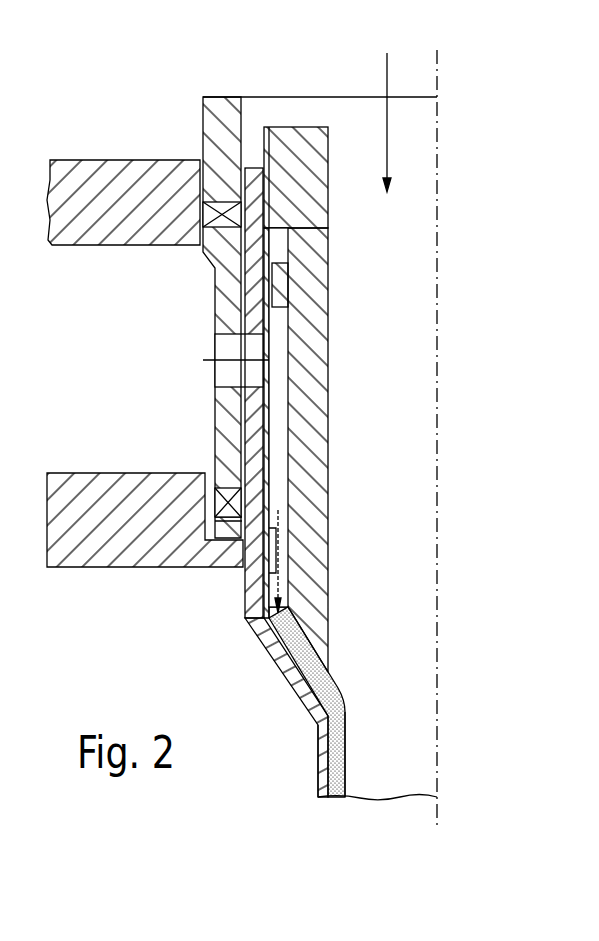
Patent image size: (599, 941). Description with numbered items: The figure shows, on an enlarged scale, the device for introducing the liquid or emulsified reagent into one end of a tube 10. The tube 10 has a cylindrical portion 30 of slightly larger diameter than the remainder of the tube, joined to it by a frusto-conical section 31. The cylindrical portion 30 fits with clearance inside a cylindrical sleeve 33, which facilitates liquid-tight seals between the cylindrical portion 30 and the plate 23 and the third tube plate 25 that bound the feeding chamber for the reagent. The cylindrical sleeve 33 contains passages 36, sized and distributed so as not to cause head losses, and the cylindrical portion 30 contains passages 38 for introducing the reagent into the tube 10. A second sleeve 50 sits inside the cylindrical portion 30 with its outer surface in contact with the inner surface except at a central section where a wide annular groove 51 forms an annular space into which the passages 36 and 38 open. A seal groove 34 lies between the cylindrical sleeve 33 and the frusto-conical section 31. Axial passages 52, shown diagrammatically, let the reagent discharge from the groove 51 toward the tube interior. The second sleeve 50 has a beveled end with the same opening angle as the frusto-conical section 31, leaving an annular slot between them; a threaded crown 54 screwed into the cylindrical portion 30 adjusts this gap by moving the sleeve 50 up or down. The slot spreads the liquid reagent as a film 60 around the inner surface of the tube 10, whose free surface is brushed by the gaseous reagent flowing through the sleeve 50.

The tube 10 is at (318, 763).
The plate 23 is at (107, 553).
The third tube plate 25 is at (90, 167).
The cylindrical portion 30 is at (263, 438).
The frusto-conical section 31 is at (282, 660).
The cylindrical sleeve 33 is at (200, 262).
The seal groove 34 is at (213, 490).
The passages 36 is at (208, 368).
The passages 38 is at (255, 347).
The second sleeve 50 is at (320, 438).
The annular groove 51 is at (283, 473).
The axial passages 52 is at (285, 552).
The threaded crown 54 is at (317, 185).
The film 60 is at (345, 753).